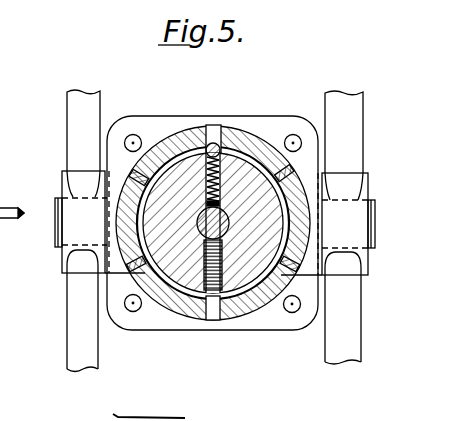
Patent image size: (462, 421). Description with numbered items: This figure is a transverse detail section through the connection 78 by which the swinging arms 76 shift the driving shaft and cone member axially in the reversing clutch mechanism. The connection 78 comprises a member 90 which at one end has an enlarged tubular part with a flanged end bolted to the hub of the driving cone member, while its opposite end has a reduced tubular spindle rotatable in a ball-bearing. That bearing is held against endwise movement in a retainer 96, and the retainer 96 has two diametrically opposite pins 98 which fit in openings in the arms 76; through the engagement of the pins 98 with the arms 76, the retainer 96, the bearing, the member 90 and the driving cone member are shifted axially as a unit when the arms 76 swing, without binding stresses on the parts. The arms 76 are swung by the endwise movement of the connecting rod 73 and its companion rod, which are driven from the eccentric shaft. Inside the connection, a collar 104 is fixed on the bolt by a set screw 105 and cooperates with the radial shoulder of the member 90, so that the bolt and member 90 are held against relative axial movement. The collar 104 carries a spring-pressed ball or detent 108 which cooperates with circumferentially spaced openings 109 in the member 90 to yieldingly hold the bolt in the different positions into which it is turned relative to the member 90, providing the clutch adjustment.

The connecting rod 73 is at (12, 200).
The arms 76 is at (70, 347).
The connection 78 is at (39, 296).
The member 90 is at (249, 141).
The retainer 96 is at (150, 117).
The pins 98 is at (55, 237).
The collar 104 is at (241, 277).
The set screw 105 is at (203, 270).
The spring-pressed ball or detent 108 is at (207, 145).
The openings 109 is at (217, 127).